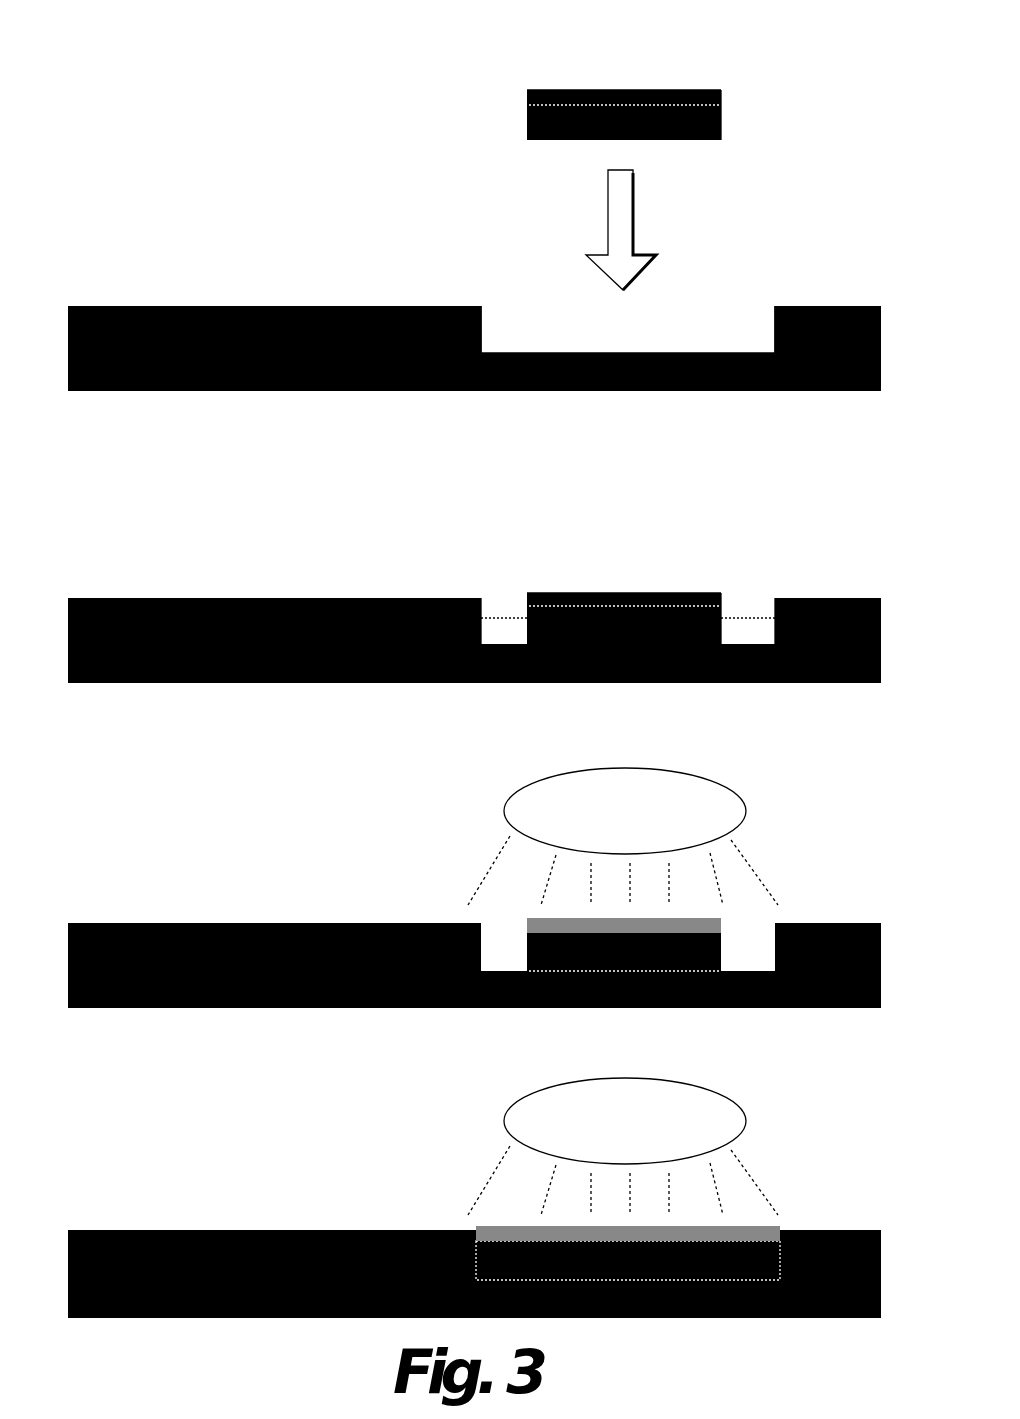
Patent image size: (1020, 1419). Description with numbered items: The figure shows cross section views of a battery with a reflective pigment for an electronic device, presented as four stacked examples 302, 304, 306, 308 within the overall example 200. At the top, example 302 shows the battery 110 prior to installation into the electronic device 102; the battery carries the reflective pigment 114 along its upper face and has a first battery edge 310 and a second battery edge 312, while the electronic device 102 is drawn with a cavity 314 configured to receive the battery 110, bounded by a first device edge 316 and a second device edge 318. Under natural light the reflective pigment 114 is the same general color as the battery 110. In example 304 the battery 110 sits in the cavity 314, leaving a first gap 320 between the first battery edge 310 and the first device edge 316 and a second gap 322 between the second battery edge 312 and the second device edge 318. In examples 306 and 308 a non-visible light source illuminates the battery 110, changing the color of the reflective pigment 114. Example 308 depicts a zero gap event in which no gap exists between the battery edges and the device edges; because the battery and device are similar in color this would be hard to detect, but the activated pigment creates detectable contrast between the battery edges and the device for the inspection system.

The electronic device 200 is at (148, 90).
The electronic device 102 is at (258, 297).
The battery 110 is at (598, 125).
The reflective pigment 114 is at (628, 82).
The example prior to installation 302 is at (368, 192).
The example with battery installed 304 is at (368, 480).
The example under non-visible light illumination 306 is at (368, 808).
The zero gap event example 308 is at (368, 1172).
The first battery edge 310 is at (519, 82).
The second battery edge 312 is at (713, 88).
The cavity 314 is at (655, 308).
The first device edge 316 is at (473, 297).
The second device edge 318 is at (768, 297).
The first gap 320 is at (493, 600).
The second gap 322 is at (738, 592).